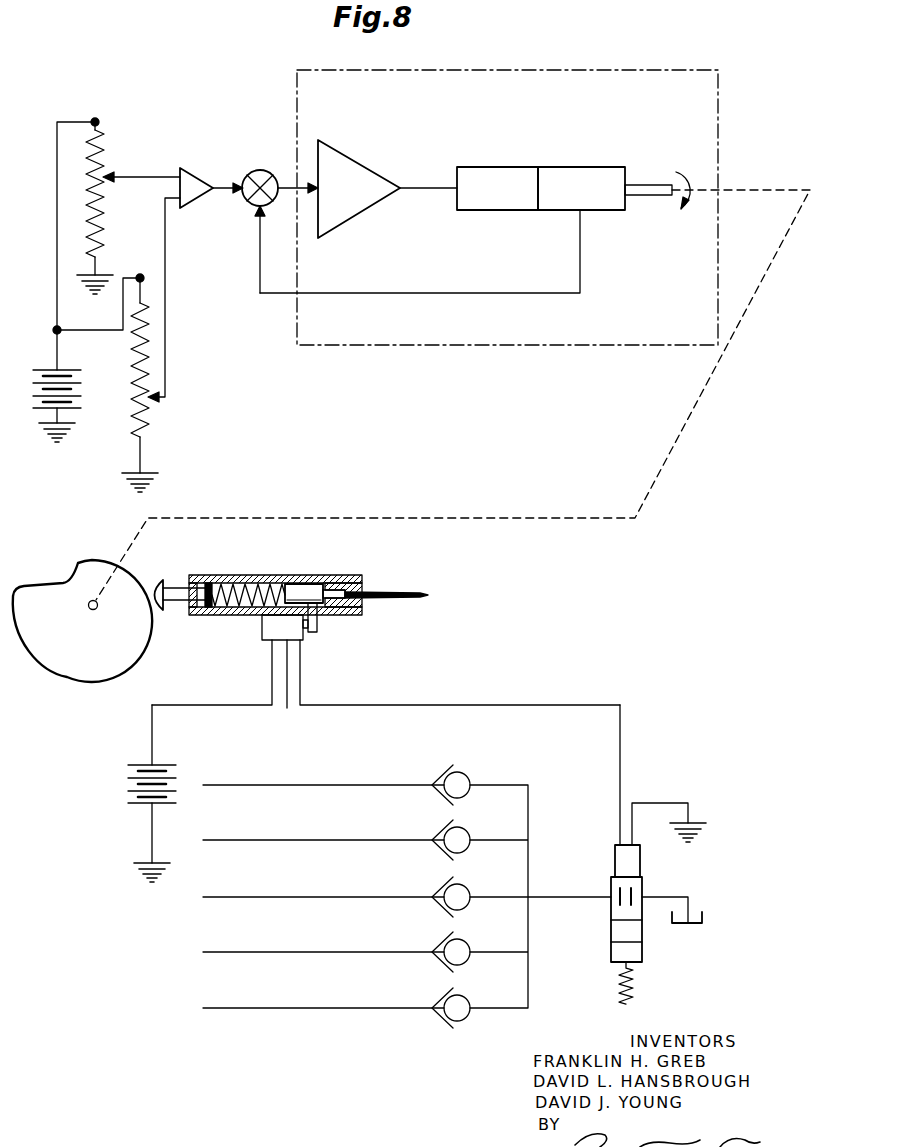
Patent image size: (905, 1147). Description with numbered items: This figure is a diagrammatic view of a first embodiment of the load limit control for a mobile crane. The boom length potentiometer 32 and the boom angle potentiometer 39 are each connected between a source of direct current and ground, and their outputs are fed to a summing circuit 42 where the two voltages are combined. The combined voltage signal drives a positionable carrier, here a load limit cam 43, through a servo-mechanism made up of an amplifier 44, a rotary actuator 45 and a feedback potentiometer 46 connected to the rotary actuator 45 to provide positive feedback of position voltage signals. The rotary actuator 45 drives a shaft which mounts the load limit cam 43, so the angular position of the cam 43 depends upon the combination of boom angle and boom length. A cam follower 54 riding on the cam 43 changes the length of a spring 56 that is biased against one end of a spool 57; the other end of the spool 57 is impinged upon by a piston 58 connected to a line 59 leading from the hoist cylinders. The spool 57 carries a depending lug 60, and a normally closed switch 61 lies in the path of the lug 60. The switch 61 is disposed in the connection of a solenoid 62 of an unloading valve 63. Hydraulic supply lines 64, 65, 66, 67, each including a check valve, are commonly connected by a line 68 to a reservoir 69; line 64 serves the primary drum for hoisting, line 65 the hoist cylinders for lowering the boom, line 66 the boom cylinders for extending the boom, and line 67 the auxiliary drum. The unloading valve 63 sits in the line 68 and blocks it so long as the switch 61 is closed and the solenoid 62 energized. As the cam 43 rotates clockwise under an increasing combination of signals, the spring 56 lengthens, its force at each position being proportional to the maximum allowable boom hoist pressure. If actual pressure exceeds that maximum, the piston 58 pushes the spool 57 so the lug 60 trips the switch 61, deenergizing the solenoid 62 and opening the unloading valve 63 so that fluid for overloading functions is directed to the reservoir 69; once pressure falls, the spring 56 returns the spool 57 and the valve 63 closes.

The boom length potentiometer 32 is at (102, 158).
The boom angle potentiometer 39 is at (148, 412).
The summing circuit 42 is at (197, 185).
The load limit cam 43 is at (90, 558).
The amplifier 44 is at (360, 166).
The rotary actuator 45 is at (494, 172).
The feedback potentiometer 46 is at (597, 170).
The cam follower 54 is at (162, 582).
The spring 56 is at (252, 584).
The spool 57 is at (312, 583).
The piston 58 is at (337, 592).
The line 59 is at (402, 592).
The depending lug 60 is at (318, 629).
The normally closed switch 61 is at (262, 623).
The solenoid 62 is at (614, 856).
The unloading valve 63 is at (644, 885).
The hydraulic supply line 64 is at (362, 839).
The hydraulic supply line 65 is at (375, 896).
The hydraulic supply line 66 is at (366, 951).
The hydraulic supply line 67 is at (372, 1007).
The line 68 is at (563, 903).
The reservoir 69 is at (706, 918).